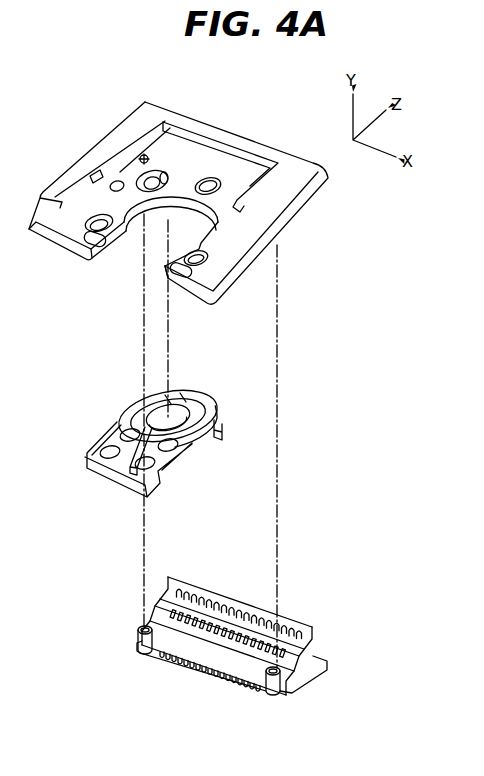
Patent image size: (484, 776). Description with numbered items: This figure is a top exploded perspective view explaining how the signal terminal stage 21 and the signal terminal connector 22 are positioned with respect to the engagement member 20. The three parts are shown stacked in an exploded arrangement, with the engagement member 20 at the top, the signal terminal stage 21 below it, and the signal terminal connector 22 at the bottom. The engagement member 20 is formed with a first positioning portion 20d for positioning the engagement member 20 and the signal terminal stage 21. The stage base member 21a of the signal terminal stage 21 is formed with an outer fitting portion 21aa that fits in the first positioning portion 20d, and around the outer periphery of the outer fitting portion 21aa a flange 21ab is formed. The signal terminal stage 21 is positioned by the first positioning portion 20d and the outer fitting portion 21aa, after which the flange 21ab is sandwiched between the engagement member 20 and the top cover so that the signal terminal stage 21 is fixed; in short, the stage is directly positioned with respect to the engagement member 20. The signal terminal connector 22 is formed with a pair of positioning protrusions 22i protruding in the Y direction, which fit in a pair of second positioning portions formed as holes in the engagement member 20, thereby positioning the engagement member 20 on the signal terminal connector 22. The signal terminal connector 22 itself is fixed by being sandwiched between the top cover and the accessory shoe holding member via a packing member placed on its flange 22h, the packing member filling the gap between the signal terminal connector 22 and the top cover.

The engagement member 20 is at (178, 180).
The first positioning portion 20d is at (192, 252).
The signal terminal stage 21 is at (178, 433).
The stage base member 21a is at (196, 411).
The outer fitting portion 21aa is at (216, 430).
The flange 21ab is at (180, 463).
The signal terminal connector 22 is at (237, 653).
The positioning protrusions 22i is at (143, 655).
The flange 22h is at (302, 673).